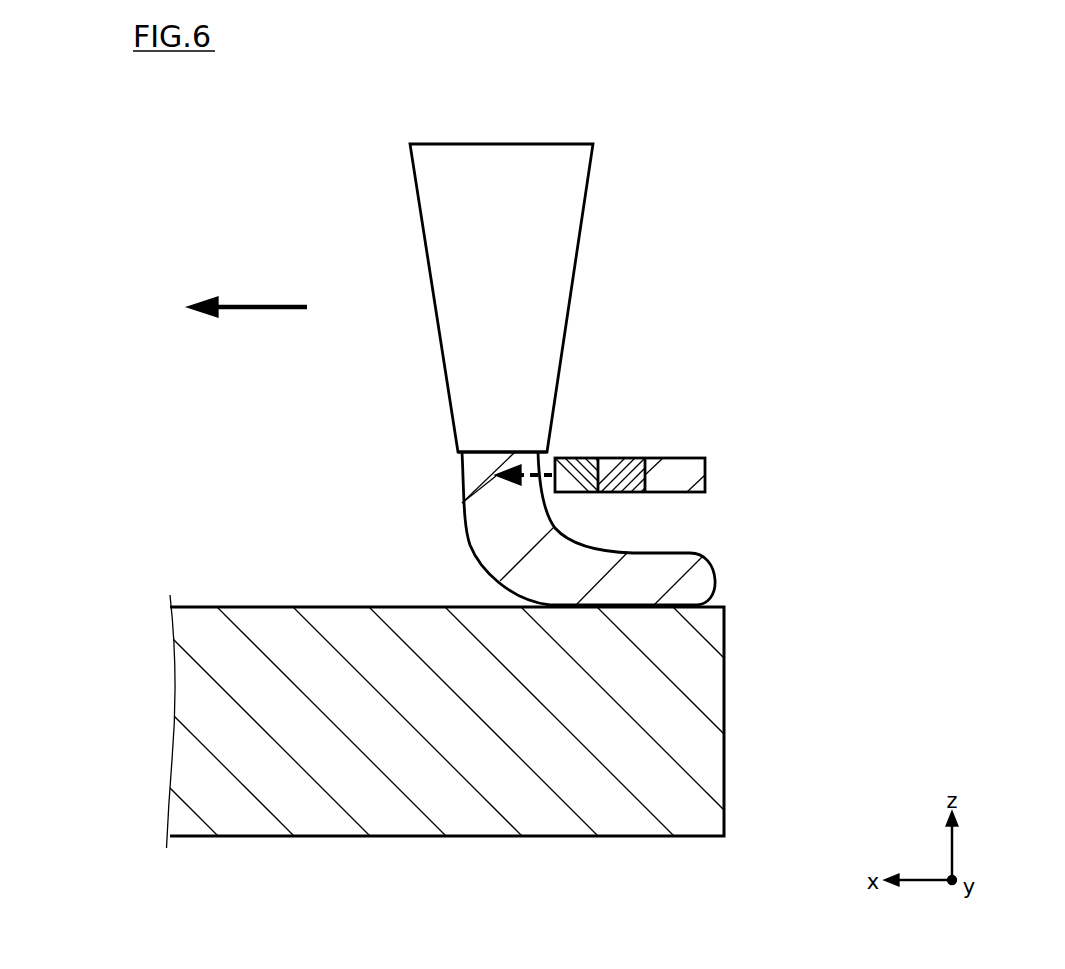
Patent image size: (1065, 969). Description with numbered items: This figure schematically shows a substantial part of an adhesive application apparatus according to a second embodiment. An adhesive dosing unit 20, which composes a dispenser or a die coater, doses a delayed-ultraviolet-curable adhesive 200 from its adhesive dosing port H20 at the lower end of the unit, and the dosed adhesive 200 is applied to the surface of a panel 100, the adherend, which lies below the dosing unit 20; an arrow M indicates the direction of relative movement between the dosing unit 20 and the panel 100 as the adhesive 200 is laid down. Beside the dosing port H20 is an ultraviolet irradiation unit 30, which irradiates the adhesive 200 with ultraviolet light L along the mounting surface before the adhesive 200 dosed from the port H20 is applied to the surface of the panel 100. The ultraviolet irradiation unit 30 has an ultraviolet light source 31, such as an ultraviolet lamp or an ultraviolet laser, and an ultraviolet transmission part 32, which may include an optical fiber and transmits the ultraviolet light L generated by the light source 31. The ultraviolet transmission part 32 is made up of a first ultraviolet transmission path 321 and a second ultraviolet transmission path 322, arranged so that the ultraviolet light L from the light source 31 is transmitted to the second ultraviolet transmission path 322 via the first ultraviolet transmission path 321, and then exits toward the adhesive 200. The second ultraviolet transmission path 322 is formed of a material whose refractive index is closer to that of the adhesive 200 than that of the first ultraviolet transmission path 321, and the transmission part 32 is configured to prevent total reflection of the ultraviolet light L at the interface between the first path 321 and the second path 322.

The adhesive dosing unit 20 is at (563, 155).
The adhesive dosing port H20 is at (441, 452).
The moving direction M is at (260, 305).
The ultraviolet light L is at (500, 480).
The ultraviolet irradiation unit 30 is at (660, 382).
The ultraviolet light source 31 is at (692, 470).
The ultraviolet transmission part 32 is at (626, 408).
The first ultraviolet transmission path 321 is at (595, 378).
The second ultraviolet transmission path 322 is at (578, 462).
The panel 100 is at (703, 783).
The adhesive 200 is at (703, 572).